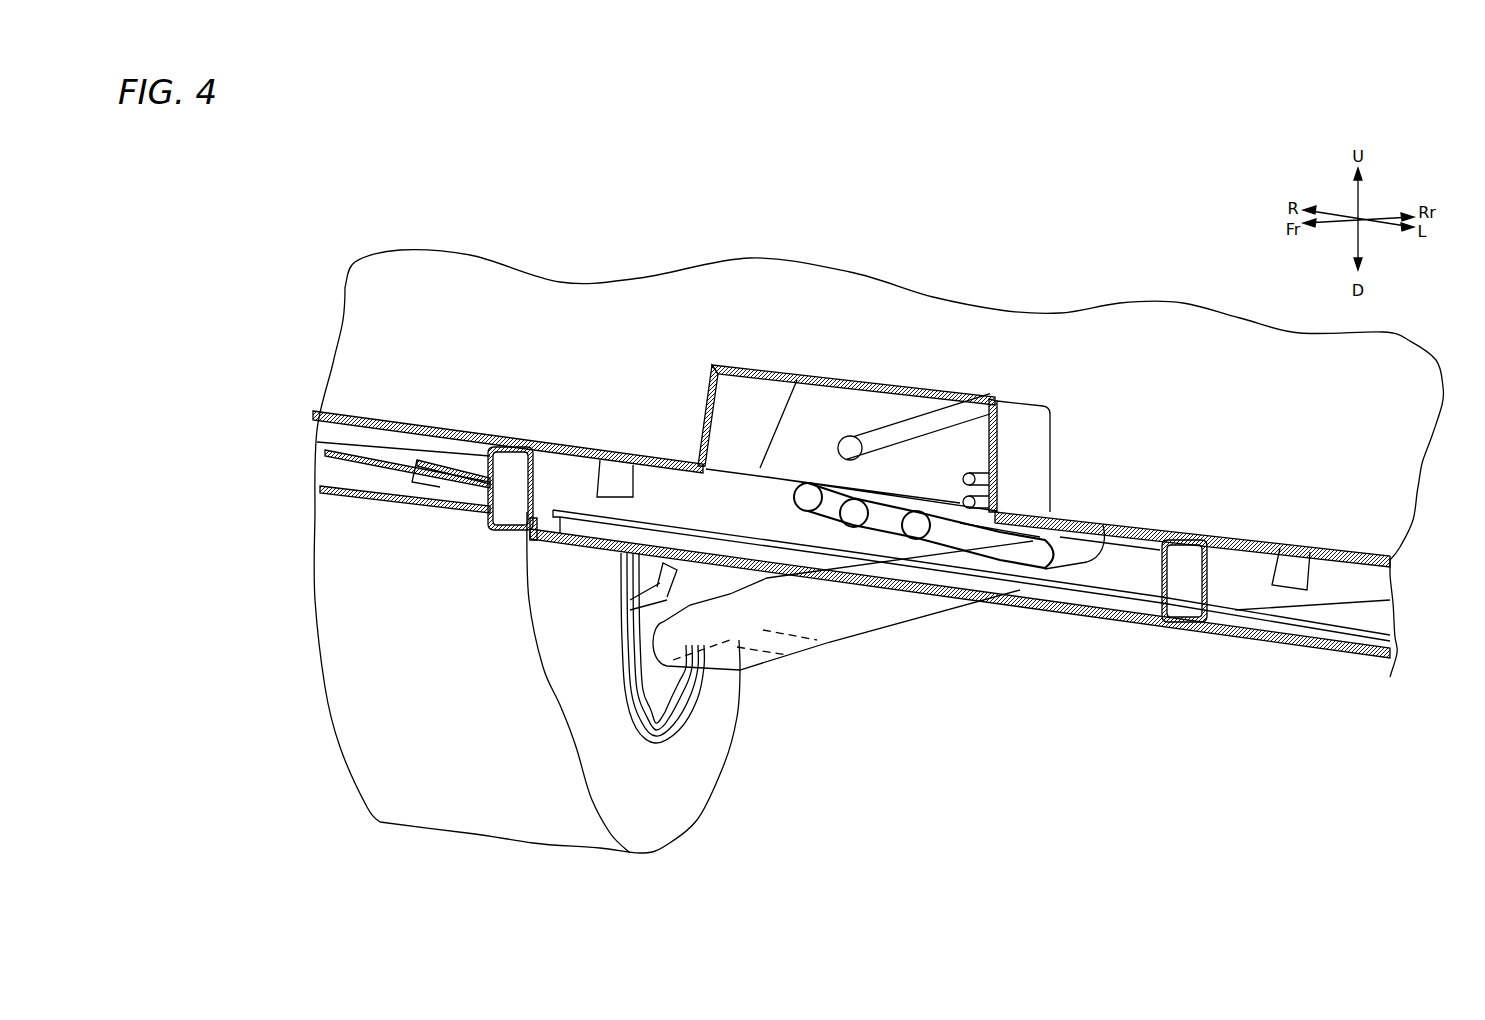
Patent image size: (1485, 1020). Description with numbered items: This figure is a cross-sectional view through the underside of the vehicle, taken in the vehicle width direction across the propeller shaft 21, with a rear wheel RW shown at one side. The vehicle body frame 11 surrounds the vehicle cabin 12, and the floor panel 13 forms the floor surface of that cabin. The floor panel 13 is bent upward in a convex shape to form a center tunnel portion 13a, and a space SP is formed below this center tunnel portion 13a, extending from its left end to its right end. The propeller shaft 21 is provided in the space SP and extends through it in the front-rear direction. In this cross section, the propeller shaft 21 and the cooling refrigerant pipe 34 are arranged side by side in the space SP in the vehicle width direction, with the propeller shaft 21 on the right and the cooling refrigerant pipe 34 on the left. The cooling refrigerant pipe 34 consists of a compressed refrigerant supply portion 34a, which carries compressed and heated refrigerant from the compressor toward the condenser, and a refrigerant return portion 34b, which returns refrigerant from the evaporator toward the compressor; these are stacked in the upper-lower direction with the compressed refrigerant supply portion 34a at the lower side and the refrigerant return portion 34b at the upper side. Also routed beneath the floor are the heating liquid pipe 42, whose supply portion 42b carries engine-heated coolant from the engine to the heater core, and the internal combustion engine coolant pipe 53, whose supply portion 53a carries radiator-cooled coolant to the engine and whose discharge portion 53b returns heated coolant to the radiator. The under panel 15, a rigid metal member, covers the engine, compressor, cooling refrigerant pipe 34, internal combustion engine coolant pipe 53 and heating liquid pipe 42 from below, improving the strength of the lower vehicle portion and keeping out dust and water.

The vehicle body frame 11 is at (508, 487).
The vehicle cabin 12 is at (640, 308).
The floor panel 13 is at (447, 425).
The center tunnel portion 13a is at (930, 396).
The under panel 15 is at (1058, 614).
The propeller shaft 21 is at (852, 436).
The cooling refrigerant pipe 34 is at (1071, 469).
The compressed refrigerant supply portion 34a is at (977, 503).
The refrigerant return portion 34b is at (974, 473).
The heating liquid pipe 42 is at (920, 619).
The supply portion 42b is at (808, 512).
The internal combustion engine coolant pipe 53 is at (904, 615).
The supply portion 53a is at (855, 528).
The discharge portion 53b is at (917, 540).
The rear wheel RW is at (381, 798).
The space SP is at (760, 515).